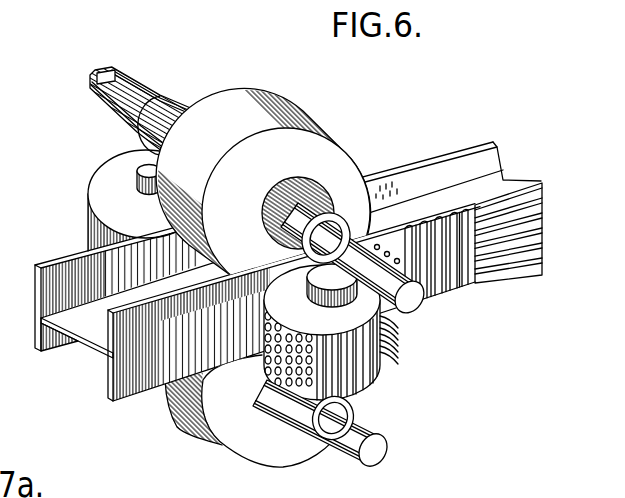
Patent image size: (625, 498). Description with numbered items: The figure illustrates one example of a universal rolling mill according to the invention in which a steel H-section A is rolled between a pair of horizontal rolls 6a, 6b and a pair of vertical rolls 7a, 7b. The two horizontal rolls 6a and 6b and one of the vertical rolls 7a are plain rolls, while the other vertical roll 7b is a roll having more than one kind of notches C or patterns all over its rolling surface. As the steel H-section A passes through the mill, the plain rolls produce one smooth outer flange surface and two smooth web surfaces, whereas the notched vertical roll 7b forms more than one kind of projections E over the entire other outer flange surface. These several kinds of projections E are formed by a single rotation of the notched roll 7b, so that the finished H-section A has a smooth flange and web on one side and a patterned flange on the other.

The horizontal roll 6a is at (305, 116).
The horizontal roll 6b is at (259, 446).
The vertical roll 7a is at (101, 190).
The vertical roll 7b is at (380, 322).
The steel H-section A is at (95, 355).
The projections E is at (395, 240).
The notches C is at (400, 341).